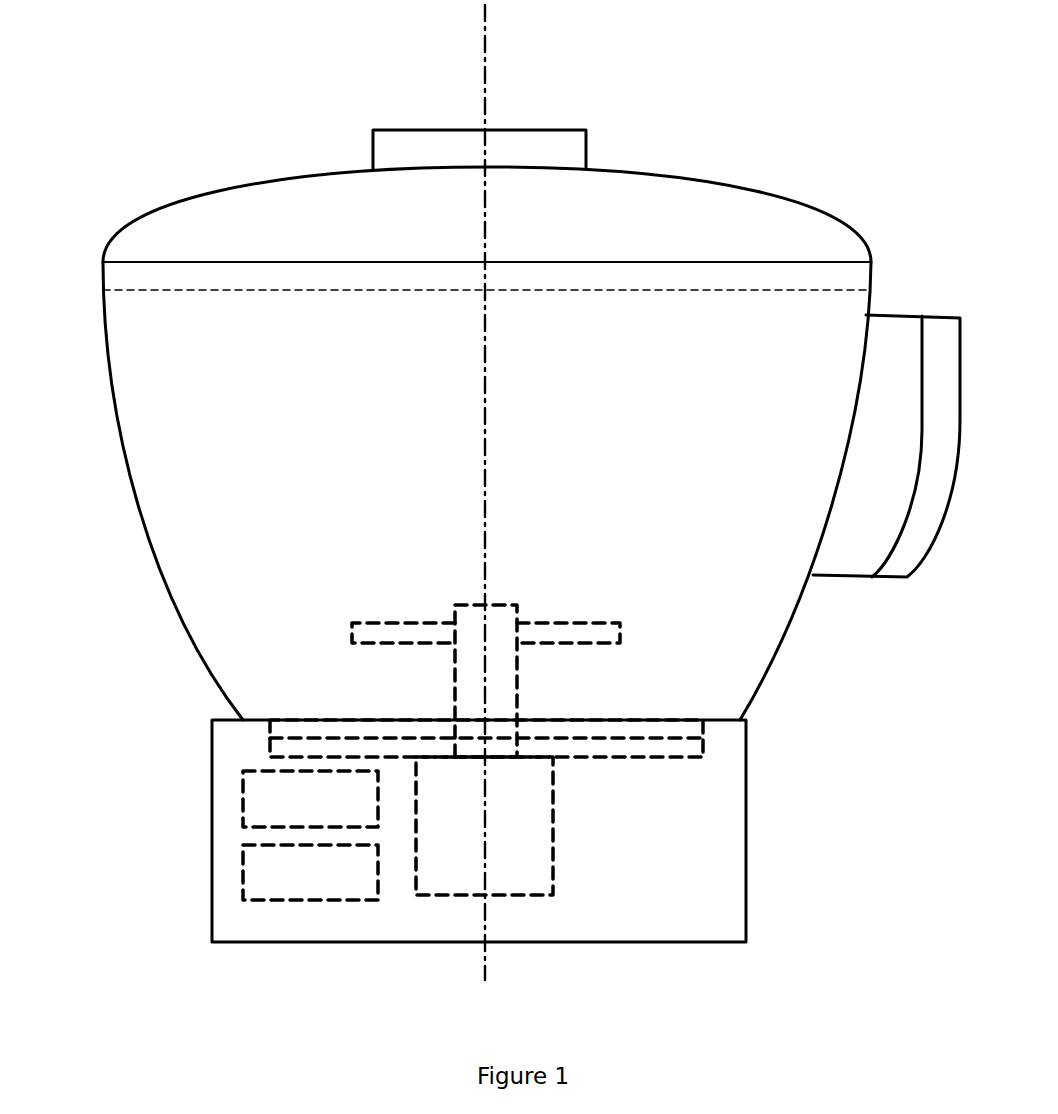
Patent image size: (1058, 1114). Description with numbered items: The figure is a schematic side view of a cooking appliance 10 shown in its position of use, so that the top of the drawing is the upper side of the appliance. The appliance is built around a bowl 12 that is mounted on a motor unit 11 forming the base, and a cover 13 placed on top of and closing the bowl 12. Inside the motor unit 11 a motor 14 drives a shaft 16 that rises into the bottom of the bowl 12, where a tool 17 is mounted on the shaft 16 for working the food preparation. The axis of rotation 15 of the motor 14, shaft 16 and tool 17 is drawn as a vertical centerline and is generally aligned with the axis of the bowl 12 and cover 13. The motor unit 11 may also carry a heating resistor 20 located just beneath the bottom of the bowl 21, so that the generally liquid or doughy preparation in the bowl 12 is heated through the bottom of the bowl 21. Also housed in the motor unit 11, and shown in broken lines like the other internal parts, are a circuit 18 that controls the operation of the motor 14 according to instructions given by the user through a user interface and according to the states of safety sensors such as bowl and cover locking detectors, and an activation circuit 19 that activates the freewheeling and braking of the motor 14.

The cooking appliance 10 is at (764, 124).
The motor unit 11 is at (723, 878).
The bowl 12 is at (158, 483).
The cover 13 is at (233, 212).
The motor 14 is at (513, 873).
The axis of rotation 15 is at (484, 78).
The shaft 16 is at (508, 668).
The tool 17 is at (372, 632).
The circuit 18 is at (256, 789).
The activation circuit 19 is at (256, 881).
The heating resistor 20 is at (687, 742).
The bottom of the bowl 21 is at (687, 730).